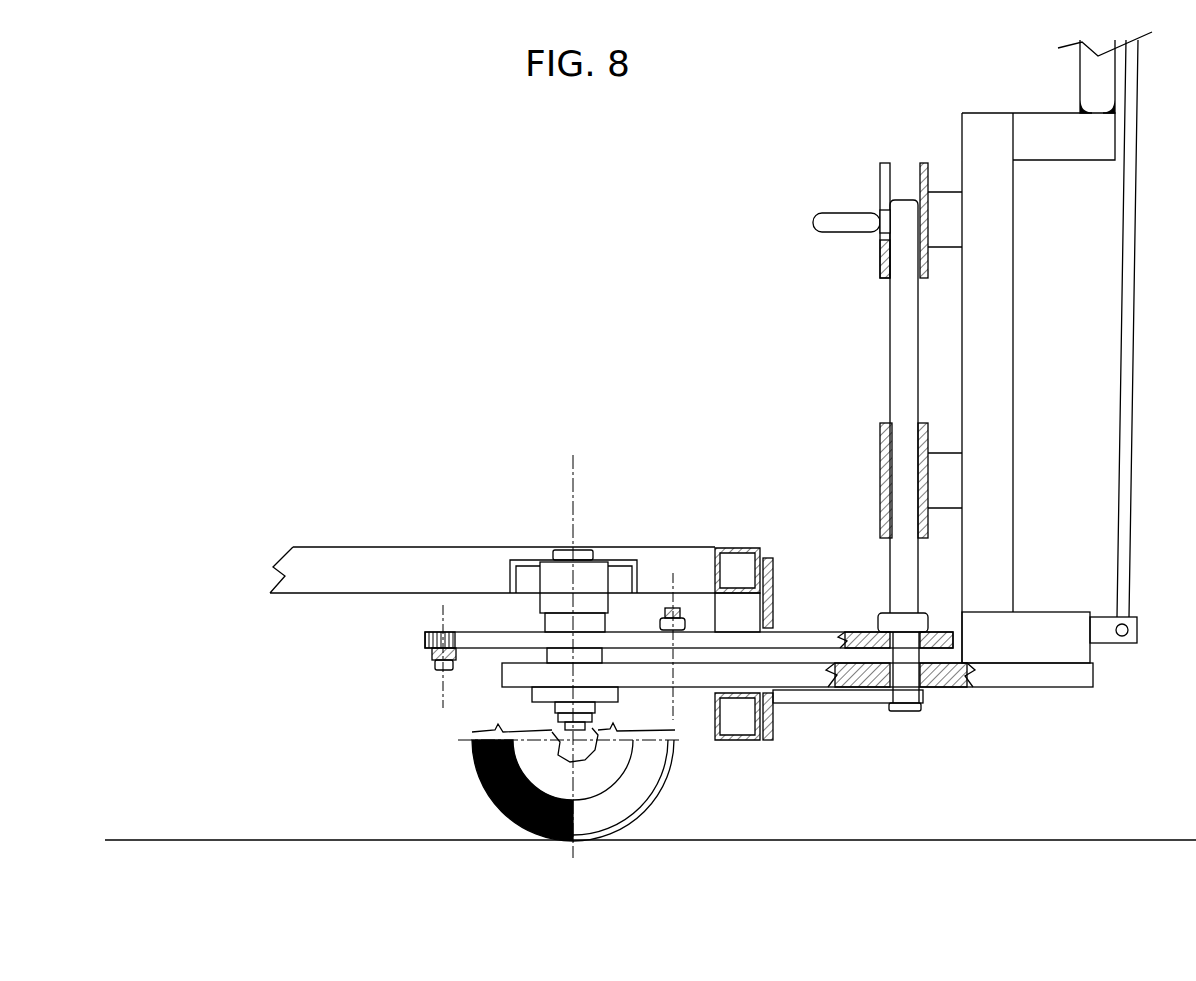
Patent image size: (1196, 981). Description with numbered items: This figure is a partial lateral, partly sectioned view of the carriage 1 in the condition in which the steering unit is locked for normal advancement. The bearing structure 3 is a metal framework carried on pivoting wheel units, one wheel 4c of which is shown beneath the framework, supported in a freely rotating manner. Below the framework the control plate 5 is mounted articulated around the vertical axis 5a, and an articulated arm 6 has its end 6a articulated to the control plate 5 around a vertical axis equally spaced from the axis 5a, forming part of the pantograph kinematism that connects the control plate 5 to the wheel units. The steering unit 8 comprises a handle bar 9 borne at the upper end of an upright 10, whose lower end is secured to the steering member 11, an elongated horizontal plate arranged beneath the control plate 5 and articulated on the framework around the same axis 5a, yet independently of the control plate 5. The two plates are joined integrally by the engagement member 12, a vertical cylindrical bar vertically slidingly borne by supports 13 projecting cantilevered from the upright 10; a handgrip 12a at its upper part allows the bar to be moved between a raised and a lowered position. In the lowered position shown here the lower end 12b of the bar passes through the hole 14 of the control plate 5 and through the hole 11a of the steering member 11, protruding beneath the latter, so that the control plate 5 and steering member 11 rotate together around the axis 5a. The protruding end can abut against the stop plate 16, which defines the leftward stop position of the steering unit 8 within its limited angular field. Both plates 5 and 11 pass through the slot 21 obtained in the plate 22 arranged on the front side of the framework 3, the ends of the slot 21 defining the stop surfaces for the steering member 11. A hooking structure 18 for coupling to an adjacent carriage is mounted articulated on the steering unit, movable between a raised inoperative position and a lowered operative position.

The carriage 1 is at (305, 290).
The bearing structure 3 is at (382, 547).
The wheel 4c is at (473, 777).
The control plate 5 is at (422, 636).
The vertical axis 5a is at (573, 496).
The articulated arm 6 is at (432, 658).
The arm end 6a is at (443, 702).
The steering unit 8 is at (930, 122).
The handle bar 9 is at (1080, 78).
The upright 10 is at (1013, 303).
The steering member 11 is at (697, 687).
The hole 11a is at (918, 710).
The engagement member 12 is at (890, 352).
The handgrip 12a is at (843, 233).
The lower end 12b is at (912, 657).
The supports 13 is at (943, 237).
The hole 14 is at (900, 632).
The stop plate 16 is at (810, 703).
The hooking structure 18 is at (1137, 462).
The slot 21 is at (775, 628).
The plate 22 is at (775, 592).